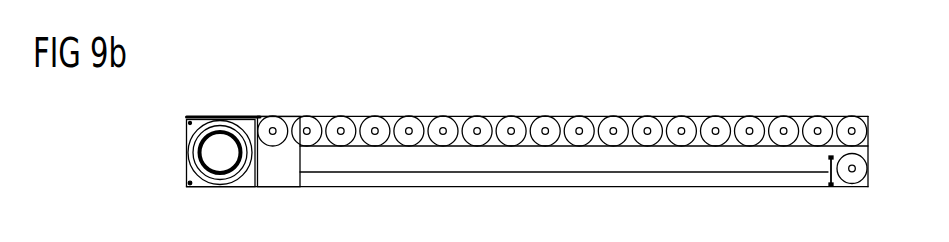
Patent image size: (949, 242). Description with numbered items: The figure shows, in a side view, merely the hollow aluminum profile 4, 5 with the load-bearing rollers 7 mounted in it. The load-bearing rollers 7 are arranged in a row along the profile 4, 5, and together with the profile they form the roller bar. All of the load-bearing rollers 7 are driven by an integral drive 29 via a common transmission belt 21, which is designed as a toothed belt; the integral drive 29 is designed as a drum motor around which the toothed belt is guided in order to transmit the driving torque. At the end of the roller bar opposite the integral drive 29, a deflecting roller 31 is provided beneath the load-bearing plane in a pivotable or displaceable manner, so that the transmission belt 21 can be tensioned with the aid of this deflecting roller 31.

The hollow aluminum profile 4 is at (528, 126).
The hollow aluminum profile 5 is at (641, 158).
The load-bearing rollers 7 is at (444, 122).
The transmission belt 21 is at (240, 114).
The integral drive 29 is at (219, 141).
The deflecting roller 31 is at (862, 170).